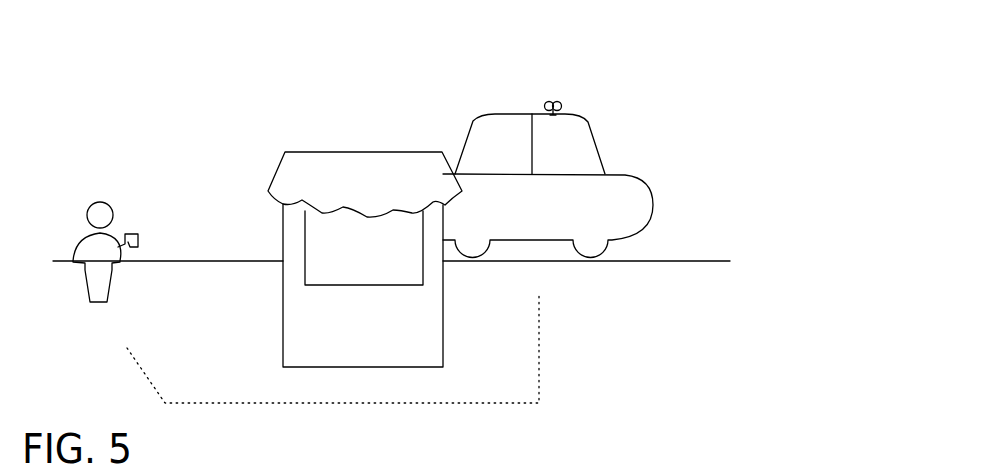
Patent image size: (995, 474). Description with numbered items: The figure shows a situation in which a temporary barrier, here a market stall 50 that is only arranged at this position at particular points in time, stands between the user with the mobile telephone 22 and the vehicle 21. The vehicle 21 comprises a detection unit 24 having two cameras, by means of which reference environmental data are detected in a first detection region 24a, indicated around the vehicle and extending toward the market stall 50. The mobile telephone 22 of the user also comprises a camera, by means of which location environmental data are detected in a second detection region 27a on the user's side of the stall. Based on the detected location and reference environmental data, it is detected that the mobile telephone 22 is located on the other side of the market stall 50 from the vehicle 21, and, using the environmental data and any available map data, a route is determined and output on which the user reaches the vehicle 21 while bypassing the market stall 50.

The vehicle 21 is at (588, 141).
The mobile telephone 22 is at (128, 217).
The detection unit 24 is at (563, 98).
The first detection region 24a is at (460, 100).
The second detection region 27a is at (190, 202).
The market stall 50 is at (280, 137).